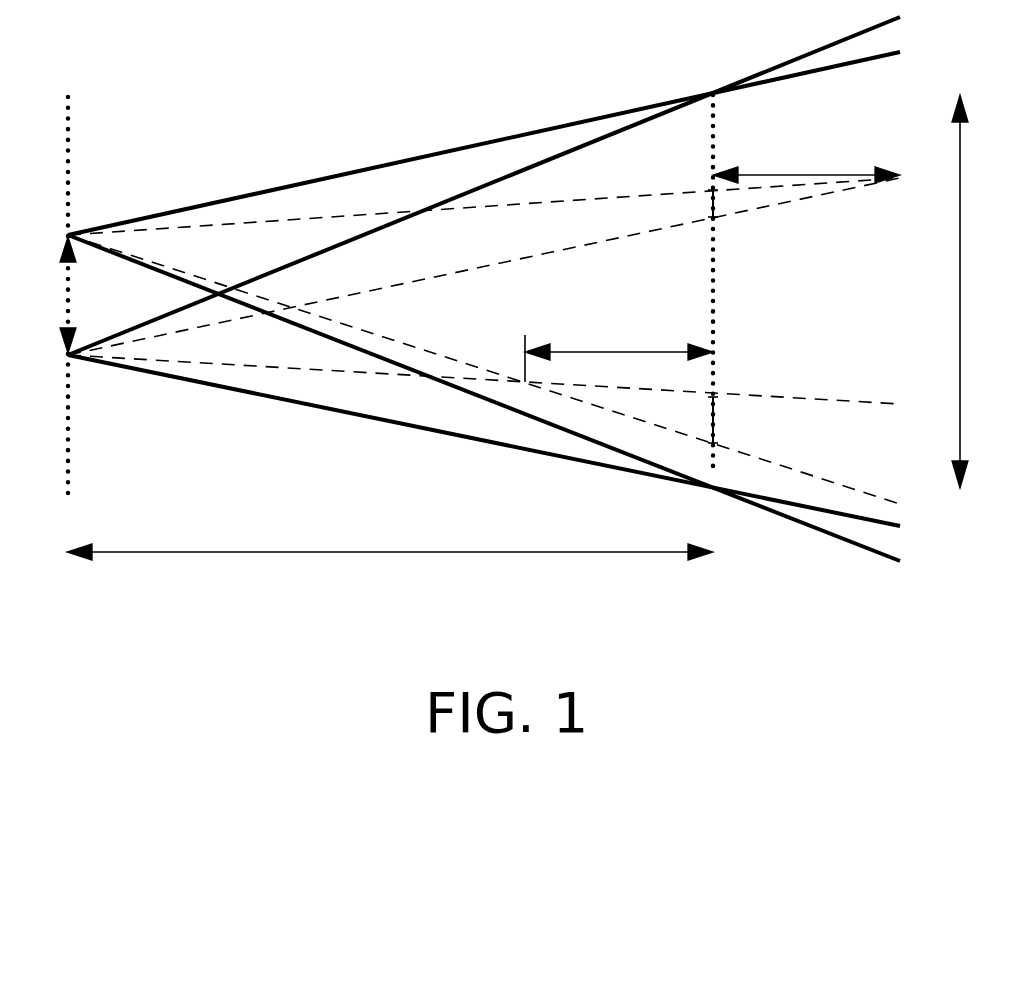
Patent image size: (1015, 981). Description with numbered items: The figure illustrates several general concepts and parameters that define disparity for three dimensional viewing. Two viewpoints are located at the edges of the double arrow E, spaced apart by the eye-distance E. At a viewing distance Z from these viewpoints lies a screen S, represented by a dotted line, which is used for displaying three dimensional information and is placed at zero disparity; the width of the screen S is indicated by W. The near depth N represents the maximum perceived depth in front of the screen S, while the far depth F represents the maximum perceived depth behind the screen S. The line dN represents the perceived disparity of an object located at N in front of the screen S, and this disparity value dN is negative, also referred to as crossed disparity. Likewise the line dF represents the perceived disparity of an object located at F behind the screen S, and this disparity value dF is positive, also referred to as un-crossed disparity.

The eye-distance E is at (65, 296).
The far F is at (796, 174).
The near N is at (621, 351).
The screen S is at (713, 294).
The width of the screen W is at (973, 291).
The viewing distance Z is at (390, 567).
The disparity of an object located at F dF is at (712, 203).
The disparity of an object located at N dN is at (714, 418).